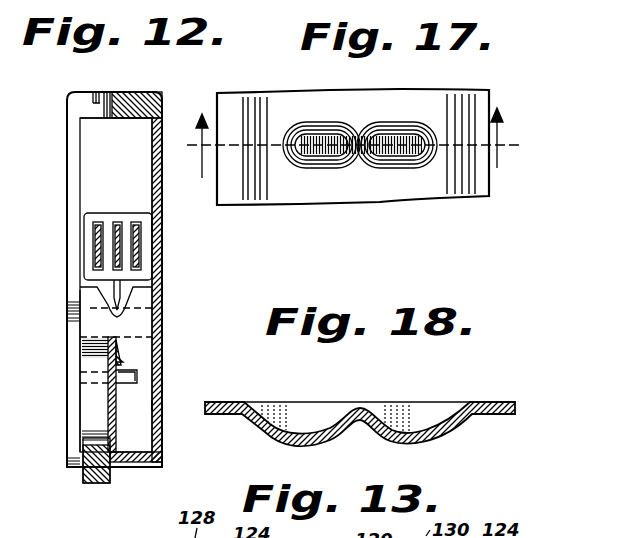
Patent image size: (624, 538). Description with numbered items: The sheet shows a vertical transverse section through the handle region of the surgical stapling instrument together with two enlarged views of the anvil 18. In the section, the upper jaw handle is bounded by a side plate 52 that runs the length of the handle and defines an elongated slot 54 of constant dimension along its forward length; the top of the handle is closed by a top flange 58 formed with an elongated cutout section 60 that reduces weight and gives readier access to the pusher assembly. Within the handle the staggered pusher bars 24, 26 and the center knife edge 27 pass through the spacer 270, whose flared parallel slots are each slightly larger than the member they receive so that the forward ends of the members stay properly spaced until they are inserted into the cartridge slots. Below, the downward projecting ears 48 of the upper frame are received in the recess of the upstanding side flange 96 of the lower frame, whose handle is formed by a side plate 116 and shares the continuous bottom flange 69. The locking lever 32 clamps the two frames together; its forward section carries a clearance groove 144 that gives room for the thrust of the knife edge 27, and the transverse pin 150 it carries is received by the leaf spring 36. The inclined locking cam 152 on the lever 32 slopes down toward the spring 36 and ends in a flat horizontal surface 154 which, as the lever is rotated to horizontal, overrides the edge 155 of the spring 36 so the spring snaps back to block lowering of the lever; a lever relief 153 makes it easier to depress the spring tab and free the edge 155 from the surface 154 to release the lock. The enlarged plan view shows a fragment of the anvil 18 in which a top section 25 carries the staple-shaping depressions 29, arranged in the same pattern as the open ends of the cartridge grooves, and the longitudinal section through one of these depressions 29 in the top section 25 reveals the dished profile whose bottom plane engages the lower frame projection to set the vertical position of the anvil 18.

In FIG. 17, the anvil 18 is at (353, 144).
In FIG. 12, the pusher bar 24 is at (139, 248).
In FIG. 17, the top section of the anvil 25 is at (250, 107).
In FIG. 18, the top section of the anvil 25 is at (490, 402).
In FIG. 12, the pusher bar 26 is at (97, 249).
In FIG. 12, the knife edge 27 is at (137, 285).
In FIG. 17, the staple-shaping depression 29 is at (350, 160).
In FIG. 18, the staple-shaping depression 29 is at (312, 413).
In FIG. 12, the locking lever 32 is at (87, 486).
In FIG. 12, the leaf spring 36 is at (117, 423).
In FIG. 12, the ear 48 is at (70, 280).
In FIG. 12, the side plate 52 is at (149, 160).
In FIG. 12, the elongated slot 54 is at (154, 266).
In FIG. 12, the top flange 58 is at (94, 93).
In FIG. 12, the cutout section 60 is at (109, 94).
In FIG. 12, the bottom flange 69 is at (121, 462).
In FIG. 12, the side flange 96 is at (73, 403).
In FIG. 12, the side plate 116 is at (164, 405).
In FIG. 12, the clearance groove 144 is at (101, 302).
In FIG. 12, the transverse pin 150 is at (135, 381).
In FIG. 12, the locking cam 152 is at (121, 343).
In FIG. 12, the lever relief 153 is at (95, 439).
In FIG. 12, the flat horizontal surface 154 is at (122, 362).
In FIG. 12, the edge of the spring 155 is at (113, 364).
In FIG. 12, the spacer 270 is at (108, 218).